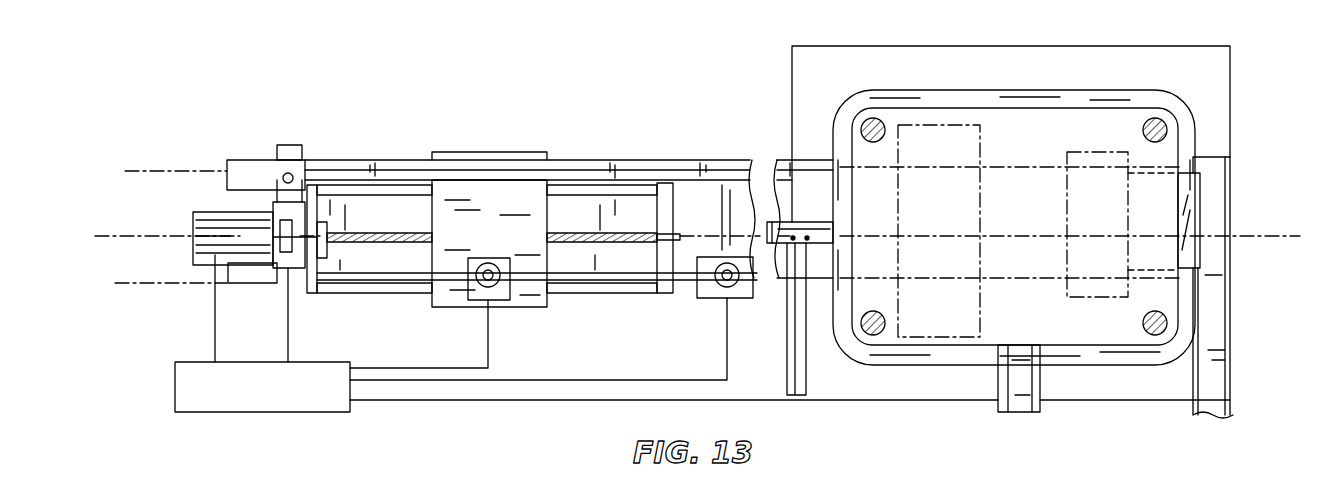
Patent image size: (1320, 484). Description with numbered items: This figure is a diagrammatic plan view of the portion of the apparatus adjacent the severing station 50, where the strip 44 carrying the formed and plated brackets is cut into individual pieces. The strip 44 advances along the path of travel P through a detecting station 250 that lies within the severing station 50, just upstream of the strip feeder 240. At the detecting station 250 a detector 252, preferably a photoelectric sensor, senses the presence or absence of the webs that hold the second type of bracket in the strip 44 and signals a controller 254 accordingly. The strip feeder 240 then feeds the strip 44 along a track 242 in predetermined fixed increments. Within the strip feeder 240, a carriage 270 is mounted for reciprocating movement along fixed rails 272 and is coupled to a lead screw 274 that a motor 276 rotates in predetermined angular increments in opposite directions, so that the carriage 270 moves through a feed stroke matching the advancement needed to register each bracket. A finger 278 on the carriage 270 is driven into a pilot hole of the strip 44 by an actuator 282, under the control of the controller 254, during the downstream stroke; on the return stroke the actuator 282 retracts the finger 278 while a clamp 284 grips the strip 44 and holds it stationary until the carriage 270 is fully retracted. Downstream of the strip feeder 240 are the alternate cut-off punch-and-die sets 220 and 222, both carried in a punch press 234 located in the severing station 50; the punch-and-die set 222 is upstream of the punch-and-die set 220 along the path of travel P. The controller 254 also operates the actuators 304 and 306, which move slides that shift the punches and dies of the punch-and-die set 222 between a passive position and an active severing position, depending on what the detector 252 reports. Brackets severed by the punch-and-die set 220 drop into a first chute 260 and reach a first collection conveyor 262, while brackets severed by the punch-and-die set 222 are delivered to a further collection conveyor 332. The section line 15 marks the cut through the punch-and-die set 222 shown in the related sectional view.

The strip 44 is at (179, 168).
The path of travel P is at (167, 229).
The section line 15 is at (758, 236).
The severing station 50 is at (580, 128).
The punch-and-die set 220 is at (1075, 145).
The punch-and-die set 222 is at (984, 165).
The punch press 234 is at (1160, 90).
The strip feeder 240 is at (512, 318).
The track 242 is at (366, 160).
The detecting station 250 is at (291, 140).
The detector 252 is at (288, 145).
The controller 254 is at (278, 412).
The first chute 260 is at (1200, 207).
The first collection conveyor 262 is at (1215, 325).
The carriage 270 is at (458, 322).
The fixed rails 272 is at (572, 197).
The lead screw 274 is at (400, 233).
The motor 276 is at (195, 252).
The finger 278 is at (488, 262).
The actuator 282 is at (510, 283).
The clamp 284 is at (715, 298).
The actuator 304 is at (833, 240).
The actuator 306 is at (790, 222).
The further collection conveyor 332 is at (1020, 405).